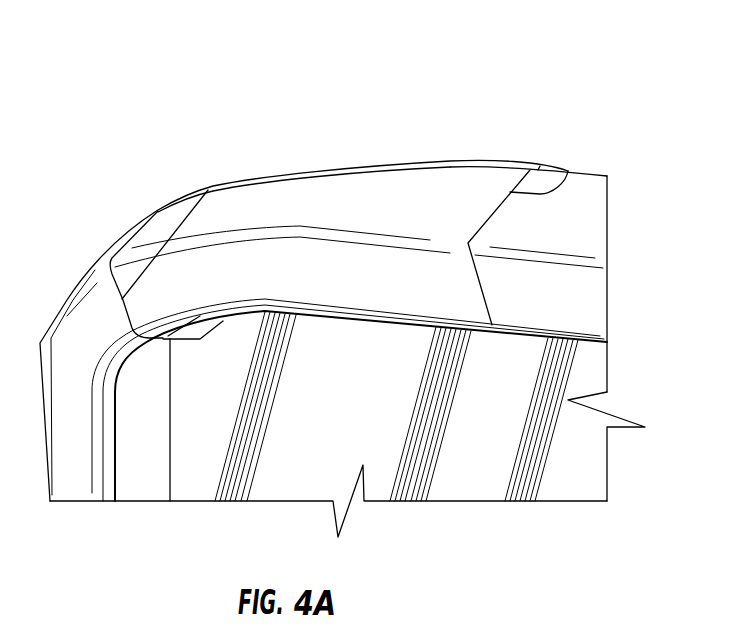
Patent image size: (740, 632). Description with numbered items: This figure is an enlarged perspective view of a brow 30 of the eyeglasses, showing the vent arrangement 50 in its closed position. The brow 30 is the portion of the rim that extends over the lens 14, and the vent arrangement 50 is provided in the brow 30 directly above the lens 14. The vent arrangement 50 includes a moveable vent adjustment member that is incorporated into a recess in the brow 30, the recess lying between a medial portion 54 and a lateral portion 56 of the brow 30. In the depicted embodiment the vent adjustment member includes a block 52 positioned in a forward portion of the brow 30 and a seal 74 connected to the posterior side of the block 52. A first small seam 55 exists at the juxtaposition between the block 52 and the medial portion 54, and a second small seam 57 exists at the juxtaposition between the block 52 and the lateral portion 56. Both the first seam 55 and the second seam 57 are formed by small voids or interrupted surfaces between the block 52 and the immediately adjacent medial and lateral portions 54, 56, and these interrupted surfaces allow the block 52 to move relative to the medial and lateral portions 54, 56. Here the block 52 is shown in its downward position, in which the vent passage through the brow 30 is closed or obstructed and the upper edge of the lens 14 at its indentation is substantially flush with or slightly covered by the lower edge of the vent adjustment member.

The vent arrangement 50 is at (262, 112).
The block 52 is at (372, 185).
The brow 30 is at (462, 197).
The seal 74 is at (523, 158).
The first seam 55 is at (568, 174).
The medial portion 54 is at (595, 215).
The lateral portion 56 is at (80, 278).
The second seam 57 is at (208, 190).
The lens 14 is at (590, 462).